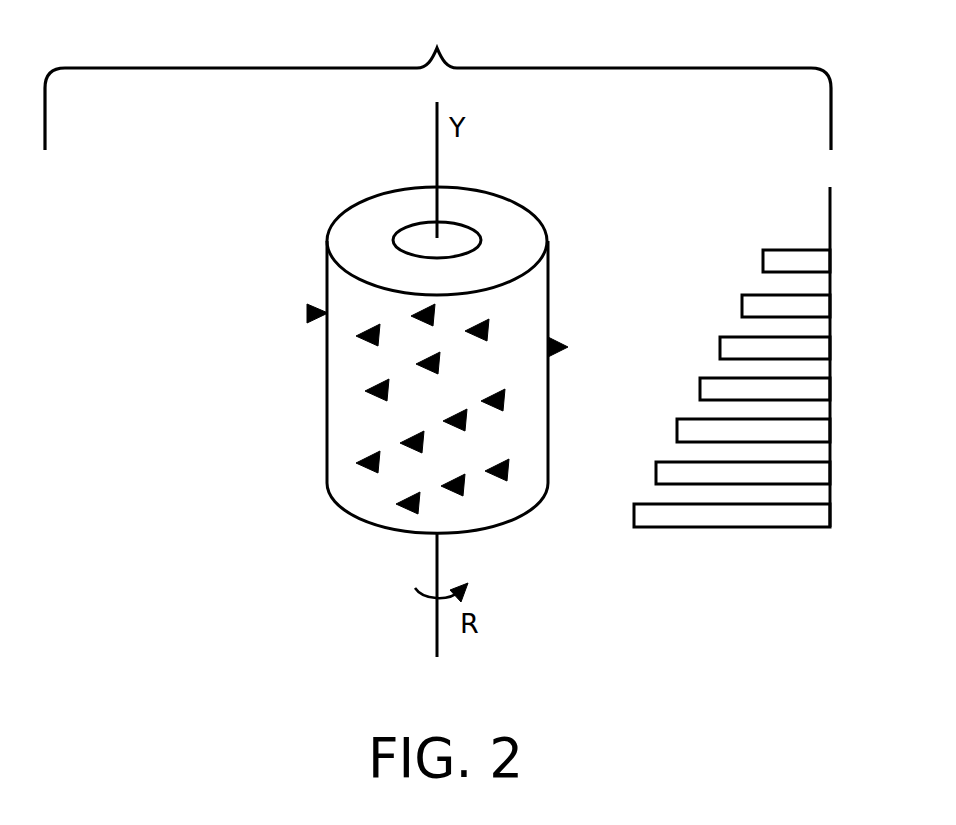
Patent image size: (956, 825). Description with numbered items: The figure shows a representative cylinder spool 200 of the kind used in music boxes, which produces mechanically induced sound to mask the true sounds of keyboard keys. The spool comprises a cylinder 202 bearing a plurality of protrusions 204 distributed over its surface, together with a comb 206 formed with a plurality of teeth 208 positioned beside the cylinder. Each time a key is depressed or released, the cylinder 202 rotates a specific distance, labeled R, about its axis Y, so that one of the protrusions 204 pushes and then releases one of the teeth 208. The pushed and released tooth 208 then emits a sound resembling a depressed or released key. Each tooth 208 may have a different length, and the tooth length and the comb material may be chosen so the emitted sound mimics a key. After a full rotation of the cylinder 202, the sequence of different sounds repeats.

The cylinder spool 200 is at (438, 77).
The cylinder 202 is at (337, 442).
The protrusions 204 is at (318, 302).
The comb 206 is at (775, 389).
The teeth 208 is at (812, 250).